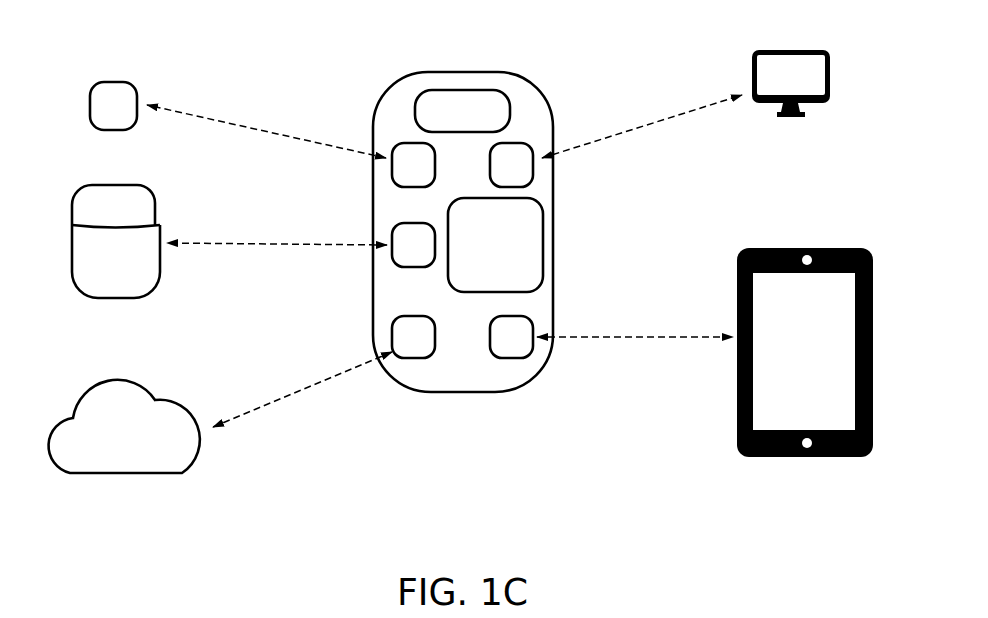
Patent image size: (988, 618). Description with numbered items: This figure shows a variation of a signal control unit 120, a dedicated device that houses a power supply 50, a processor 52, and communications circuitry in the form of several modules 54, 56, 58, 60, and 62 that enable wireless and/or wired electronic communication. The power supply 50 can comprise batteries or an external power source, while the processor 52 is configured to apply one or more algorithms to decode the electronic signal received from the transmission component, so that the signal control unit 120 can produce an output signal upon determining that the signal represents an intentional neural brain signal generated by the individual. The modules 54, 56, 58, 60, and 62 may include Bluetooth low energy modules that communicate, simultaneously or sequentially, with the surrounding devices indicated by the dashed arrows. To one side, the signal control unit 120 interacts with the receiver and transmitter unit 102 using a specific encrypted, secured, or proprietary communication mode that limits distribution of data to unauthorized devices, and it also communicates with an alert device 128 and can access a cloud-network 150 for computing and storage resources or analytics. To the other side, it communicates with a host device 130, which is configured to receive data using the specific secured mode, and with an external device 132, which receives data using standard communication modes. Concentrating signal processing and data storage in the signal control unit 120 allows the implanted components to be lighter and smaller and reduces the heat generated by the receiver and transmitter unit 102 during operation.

The power supply 50 is at (462, 108).
The processor 52 is at (520, 266).
The communications module 54 is at (515, 152).
The communications module 56 is at (413, 157).
The communications module 58 is at (410, 238).
The communications module 60 is at (407, 333).
The communications module 62 is at (512, 352).
The receiver and transmitter unit 102 is at (98, 190).
The signal control unit 120 is at (468, 393).
The alert device 128 is at (100, 100).
The host device 130 is at (828, 320).
The external device 132 is at (798, 65).
The cloud-network 150 is at (98, 383).